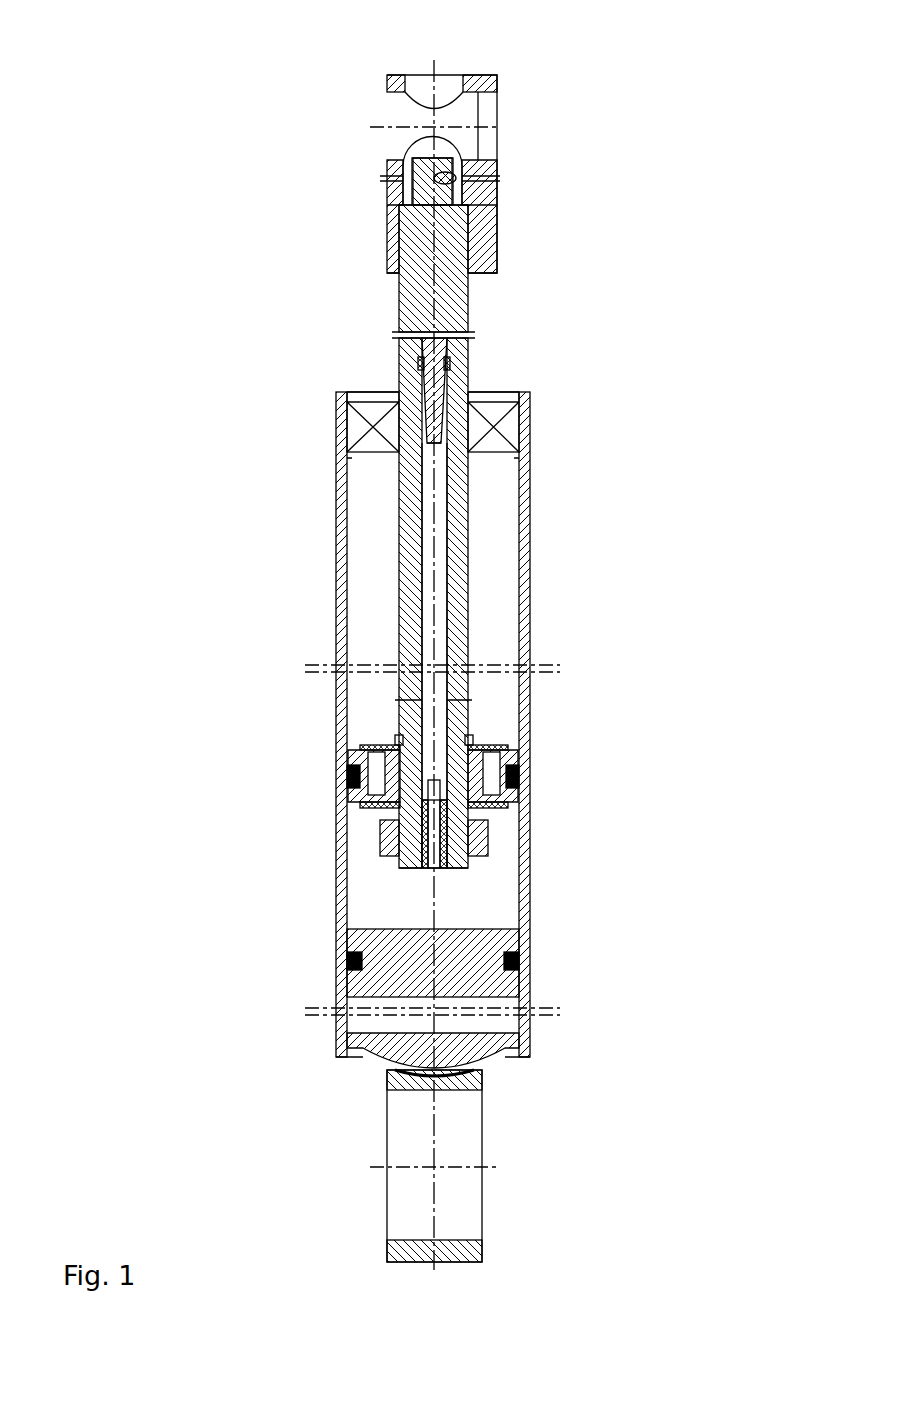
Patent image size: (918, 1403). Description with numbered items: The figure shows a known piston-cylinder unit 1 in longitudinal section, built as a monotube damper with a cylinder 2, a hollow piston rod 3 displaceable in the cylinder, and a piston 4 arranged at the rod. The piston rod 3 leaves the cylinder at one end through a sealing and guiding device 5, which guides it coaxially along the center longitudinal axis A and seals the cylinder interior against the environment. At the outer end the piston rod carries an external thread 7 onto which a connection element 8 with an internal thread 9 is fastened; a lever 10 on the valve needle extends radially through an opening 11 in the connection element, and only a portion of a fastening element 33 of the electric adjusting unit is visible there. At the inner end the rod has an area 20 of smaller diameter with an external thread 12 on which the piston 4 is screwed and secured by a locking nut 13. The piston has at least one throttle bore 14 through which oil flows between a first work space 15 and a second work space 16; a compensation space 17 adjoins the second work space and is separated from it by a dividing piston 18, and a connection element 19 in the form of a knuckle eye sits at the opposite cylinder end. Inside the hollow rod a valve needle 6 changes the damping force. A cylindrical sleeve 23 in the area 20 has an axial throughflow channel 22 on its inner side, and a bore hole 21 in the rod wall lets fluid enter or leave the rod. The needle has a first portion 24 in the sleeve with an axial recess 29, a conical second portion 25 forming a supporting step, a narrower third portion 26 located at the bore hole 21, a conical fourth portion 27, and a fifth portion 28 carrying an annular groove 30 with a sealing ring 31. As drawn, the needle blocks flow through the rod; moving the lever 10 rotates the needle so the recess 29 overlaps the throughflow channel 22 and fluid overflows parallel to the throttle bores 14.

The piston-cylinder unit 1 is at (258, 495).
The cylinder 2 is at (342, 737).
The hollow piston rod 3 is at (405, 352).
The piston 4 is at (348, 763).
The sealing and guiding device 5 is at (352, 432).
The valve needle 6 is at (425, 627).
The external thread 7 is at (468, 280).
The connection element 8 is at (468, 193).
The internal thread 9 is at (460, 232).
The lever 10 is at (450, 178).
The opening 11 is at (473, 175).
The external thread 12 is at (463, 855).
The locking nut 13 is at (487, 855).
The throttle bore 14 is at (373, 785).
The first work space 15 is at (356, 565).
The second work space 16 is at (357, 845).
The compensation space 17 is at (345, 1035).
The dividing piston 18 is at (348, 947).
The connection element 19 is at (408, 1193).
The area with smaller diameter 20 is at (403, 860).
The bore hole 21 is at (400, 698).
The throughflow channel 22 is at (443, 867).
The cylindrical sleeve 23 is at (460, 860).
The first portion 24 is at (433, 817).
The second portion 25 is at (512, 773).
The third portion 26 is at (437, 735).
The fourth portion 27 is at (445, 437).
The fifth portion 28 is at (443, 385).
The recess 29 is at (487, 843).
The annular groove 30 is at (419, 363).
The sealing ring 31 is at (463, 352).
The fastening element 33 is at (493, 208).
The center longitudinal axis A is at (434, 60).